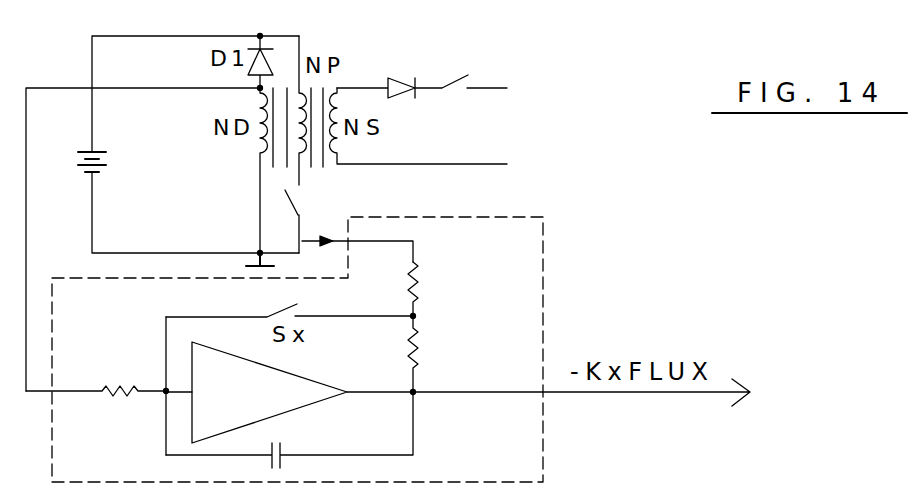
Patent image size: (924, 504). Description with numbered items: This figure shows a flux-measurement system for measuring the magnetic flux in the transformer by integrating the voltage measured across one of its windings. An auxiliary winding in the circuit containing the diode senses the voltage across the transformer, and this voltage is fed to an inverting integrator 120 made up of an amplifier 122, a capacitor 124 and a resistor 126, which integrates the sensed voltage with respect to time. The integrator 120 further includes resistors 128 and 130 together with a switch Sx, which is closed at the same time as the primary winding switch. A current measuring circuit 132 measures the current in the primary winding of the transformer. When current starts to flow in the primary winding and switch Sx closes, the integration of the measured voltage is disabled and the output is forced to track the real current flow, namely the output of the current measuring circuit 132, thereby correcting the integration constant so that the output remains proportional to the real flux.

The inverting integrator 120 is at (543, 302).
The amplifier 122 is at (218, 353).
The capacitor 124 is at (290, 443).
The resistor 126 is at (113, 405).
The resistor 128 is at (420, 290).
The resistor 130 is at (420, 342).
The current measuring circuit 132 is at (283, 241).